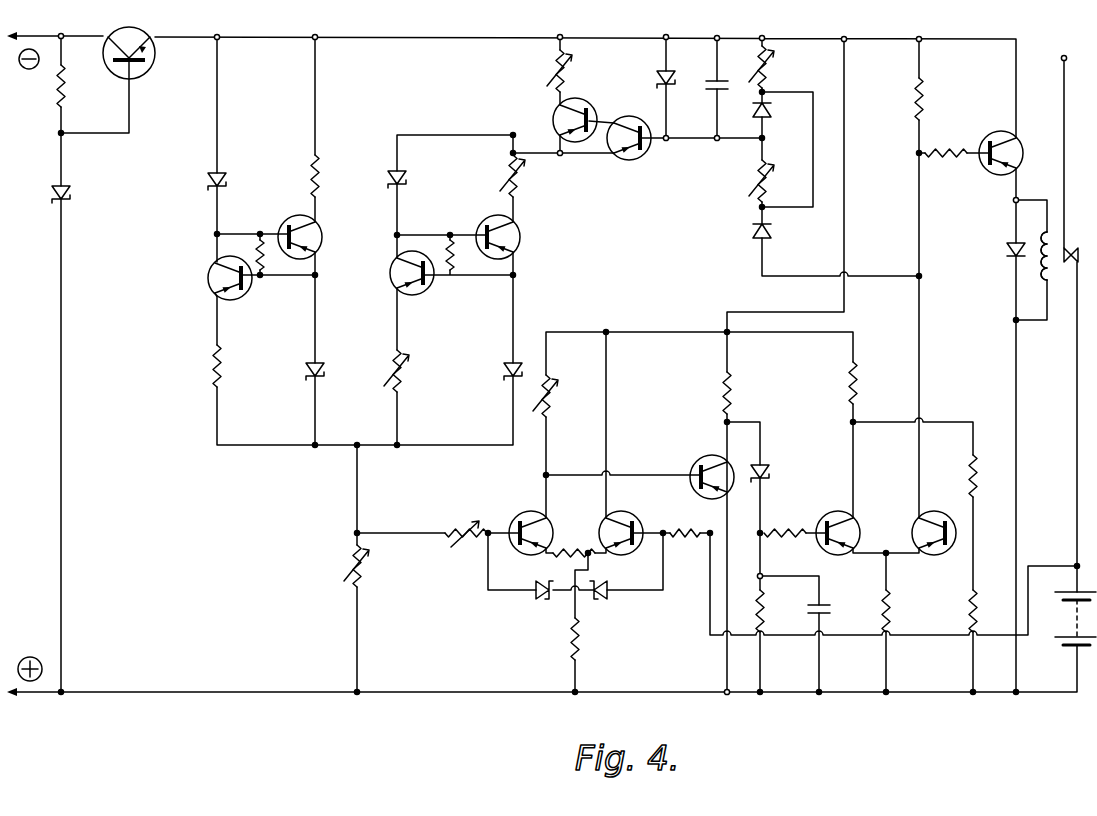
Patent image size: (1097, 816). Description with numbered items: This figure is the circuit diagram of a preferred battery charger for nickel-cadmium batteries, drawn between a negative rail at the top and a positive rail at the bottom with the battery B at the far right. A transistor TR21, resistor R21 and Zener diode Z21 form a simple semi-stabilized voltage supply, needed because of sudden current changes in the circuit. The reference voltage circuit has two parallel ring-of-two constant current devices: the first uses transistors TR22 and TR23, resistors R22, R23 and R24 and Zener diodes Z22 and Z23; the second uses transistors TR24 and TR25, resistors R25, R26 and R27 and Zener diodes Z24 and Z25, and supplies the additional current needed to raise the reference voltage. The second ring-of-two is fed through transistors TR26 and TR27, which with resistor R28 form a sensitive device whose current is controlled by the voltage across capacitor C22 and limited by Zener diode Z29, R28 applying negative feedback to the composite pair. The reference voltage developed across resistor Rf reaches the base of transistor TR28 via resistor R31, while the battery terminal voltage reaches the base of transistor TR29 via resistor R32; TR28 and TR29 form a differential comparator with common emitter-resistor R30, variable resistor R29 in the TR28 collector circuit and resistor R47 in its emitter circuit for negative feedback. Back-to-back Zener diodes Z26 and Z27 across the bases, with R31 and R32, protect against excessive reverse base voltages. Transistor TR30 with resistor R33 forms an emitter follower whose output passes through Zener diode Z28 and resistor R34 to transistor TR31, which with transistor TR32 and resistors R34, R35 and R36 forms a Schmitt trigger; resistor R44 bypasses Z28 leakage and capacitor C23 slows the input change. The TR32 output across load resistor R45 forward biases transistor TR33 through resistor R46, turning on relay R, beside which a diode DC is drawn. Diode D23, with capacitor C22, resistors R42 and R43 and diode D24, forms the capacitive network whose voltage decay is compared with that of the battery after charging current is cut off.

The resistor R21 is at (66, 90).
The transistor TR21 is at (142, 78).
The Zener diode Z21 is at (70, 192).
The Zener diode Z22 is at (225, 178).
The resistor R22 is at (316, 178).
The resistor R23 is at (258, 246).
The transistor TR22 is at (320, 246).
The transistor TR23 is at (208, 277).
The resistor R24 is at (215, 374).
The Zener diode Z23 is at (305, 370).
The Zener diode Z24 is at (406, 176).
The resistor R25 is at (533, 176).
The resistor R26 is at (450, 244).
The transistor TR24 is at (522, 237).
The transistor TR25 is at (420, 292).
The resistor R27 is at (970, 600).
The Zener diode Z25 is at (505, 368).
The resistor R28 is at (553, 66).
The transistor TR26 is at (556, 112).
The transistor TR27 is at (648, 155).
The Zener diode Z29 is at (660, 78).
The capacitor C22 is at (713, 90).
The resistor R43 is at (783, 67).
The diode D24 is at (784, 115).
The resistor R42 is at (752, 182).
The diode D23 is at (752, 232).
The resistor R45 is at (925, 110).
The transistor TR33 is at (989, 140).
The resistor R46 is at (946, 166).
The diode DC is at (1006, 250).
The relay R is at (1040, 270).
The resistor R33 is at (732, 404).
The resistor R35 is at (856, 392).
The resistor R36 is at (972, 480).
The Zener diode Z28 is at (772, 478).
The variable resistor R29 is at (562, 396).
The transistor TR30 is at (699, 468).
The transistor TR28 is at (516, 516).
The transistor TR29 is at (612, 516).
The resistor R47 is at (565, 548).
The resistor R31 is at (464, 541).
The resistor Rf is at (350, 555).
The Zener diode Z26 is at (532, 600).
The Zener diode Z27 is at (610, 600).
The common emitter-resistor R30 is at (580, 656).
The resistor R32 is at (690, 547).
The transistor TR31 is at (824, 516).
The transistor TR32 is at (918, 517).
The resistor R34 is at (785, 547).
The resistor R44 is at (764, 618).
The capacitor C23 is at (822, 608).
The battery B is at (1069, 618).